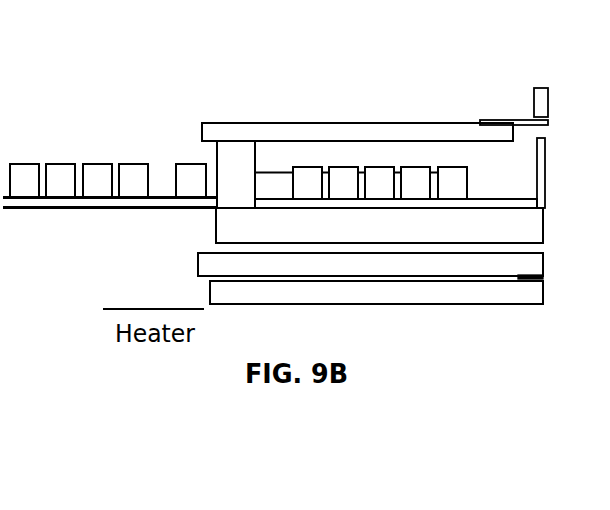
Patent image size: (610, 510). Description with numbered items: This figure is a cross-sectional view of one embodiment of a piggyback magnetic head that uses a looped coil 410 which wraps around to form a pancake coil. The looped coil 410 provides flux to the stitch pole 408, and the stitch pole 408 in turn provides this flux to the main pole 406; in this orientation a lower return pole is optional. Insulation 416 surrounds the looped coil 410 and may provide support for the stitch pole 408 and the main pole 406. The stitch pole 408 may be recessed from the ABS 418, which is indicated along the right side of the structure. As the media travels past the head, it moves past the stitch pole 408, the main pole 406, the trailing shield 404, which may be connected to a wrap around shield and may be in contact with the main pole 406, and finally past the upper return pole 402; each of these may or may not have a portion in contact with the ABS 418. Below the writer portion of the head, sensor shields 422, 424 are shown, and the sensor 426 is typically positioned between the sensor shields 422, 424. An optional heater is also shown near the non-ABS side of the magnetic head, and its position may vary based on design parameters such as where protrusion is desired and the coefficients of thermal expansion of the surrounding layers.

The upper return pole 402 is at (549, 99).
The trailing shield 404 is at (547, 178).
The main pole 406 is at (517, 120).
The stitch pole 408 is at (381, 123).
The looped coil 410 is at (452, 167).
The insulation 416 is at (379, 225).
The ABS 418 is at (550, 225).
The sensor shield 422 is at (198, 263).
The sensor shield 424 is at (210, 289).
The sensor 426 is at (543, 274).